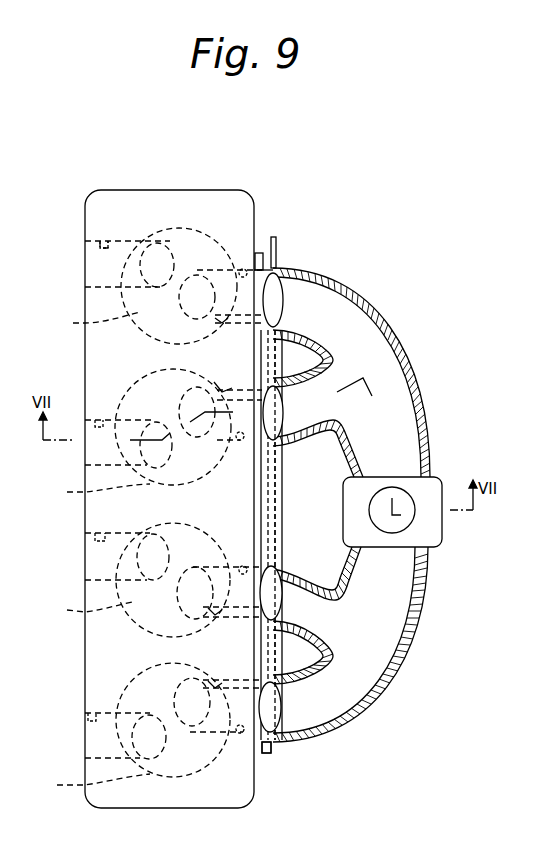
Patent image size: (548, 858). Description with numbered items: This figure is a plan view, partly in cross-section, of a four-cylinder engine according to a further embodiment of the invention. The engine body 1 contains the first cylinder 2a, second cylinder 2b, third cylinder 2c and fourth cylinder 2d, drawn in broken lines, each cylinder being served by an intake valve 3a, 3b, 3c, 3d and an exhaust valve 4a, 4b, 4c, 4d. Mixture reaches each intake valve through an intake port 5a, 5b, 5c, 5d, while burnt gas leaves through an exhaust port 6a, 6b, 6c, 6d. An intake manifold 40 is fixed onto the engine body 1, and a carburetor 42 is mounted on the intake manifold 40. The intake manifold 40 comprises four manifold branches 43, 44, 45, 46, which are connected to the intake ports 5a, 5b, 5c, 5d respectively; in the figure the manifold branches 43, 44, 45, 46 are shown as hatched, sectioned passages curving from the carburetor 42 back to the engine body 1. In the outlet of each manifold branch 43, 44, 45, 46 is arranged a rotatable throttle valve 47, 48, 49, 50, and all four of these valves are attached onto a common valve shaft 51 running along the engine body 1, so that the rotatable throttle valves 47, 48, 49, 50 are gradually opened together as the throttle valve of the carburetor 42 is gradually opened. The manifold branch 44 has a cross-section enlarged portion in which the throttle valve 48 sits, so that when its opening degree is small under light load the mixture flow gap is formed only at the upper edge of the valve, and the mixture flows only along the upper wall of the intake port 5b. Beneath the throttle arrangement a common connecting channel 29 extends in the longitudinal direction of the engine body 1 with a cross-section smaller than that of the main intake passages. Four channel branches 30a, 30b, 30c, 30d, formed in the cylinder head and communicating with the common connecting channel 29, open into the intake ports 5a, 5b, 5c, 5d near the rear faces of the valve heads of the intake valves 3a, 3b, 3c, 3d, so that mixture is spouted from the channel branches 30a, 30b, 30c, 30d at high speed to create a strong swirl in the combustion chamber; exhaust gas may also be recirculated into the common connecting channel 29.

The engine body 1 is at (268, 212).
The No. 1 cylinder 2a is at (90, 324).
The No. 2 cylinder 2b is at (91, 497).
The No. 3 cylinder 2c is at (84, 611).
The No. 4 cylinder 2d is at (90, 786).
The intake valve 3a is at (213, 242).
The intake valve 3b is at (196, 386).
The intake valve 3c is at (197, 566).
The intake valve 3d is at (186, 680).
The exhaust valve 4a is at (160, 232).
The exhaust valve 4b is at (140, 384).
The exhaust valve 4c is at (149, 530).
The exhaust valve 4d is at (134, 678).
The intake port 5a is at (243, 268).
The intake port 5b is at (240, 441).
The intake port 5c is at (243, 565).
The intake port 5d is at (240, 735).
The exhaust port 6a is at (110, 241).
The exhaust port 6b is at (100, 420).
The exhaust port 6c is at (100, 533).
The exhaust port 6d is at (93, 713).
The common connecting channel 29 is at (270, 503).
The channel branch 30a is at (236, 335).
The channel branch 30b is at (236, 381).
The channel branch 30c is at (232, 629).
The channel branch 30d is at (232, 670).
The intake manifold 40 is at (375, 509).
The carburetor 42 is at (443, 483).
The manifold branch 43 is at (318, 292).
The manifold branch 44 is at (307, 422).
The manifold branch 45 is at (302, 595).
The manifold branch 46 is at (310, 717).
The rotatable throttle valve 47 is at (272, 292).
The rotatable throttle valve 48 is at (273, 425).
The rotatable throttle valve 49 is at (277, 583).
The rotatable throttle valve 50 is at (272, 717).
The common valve shaft 51 is at (272, 753).